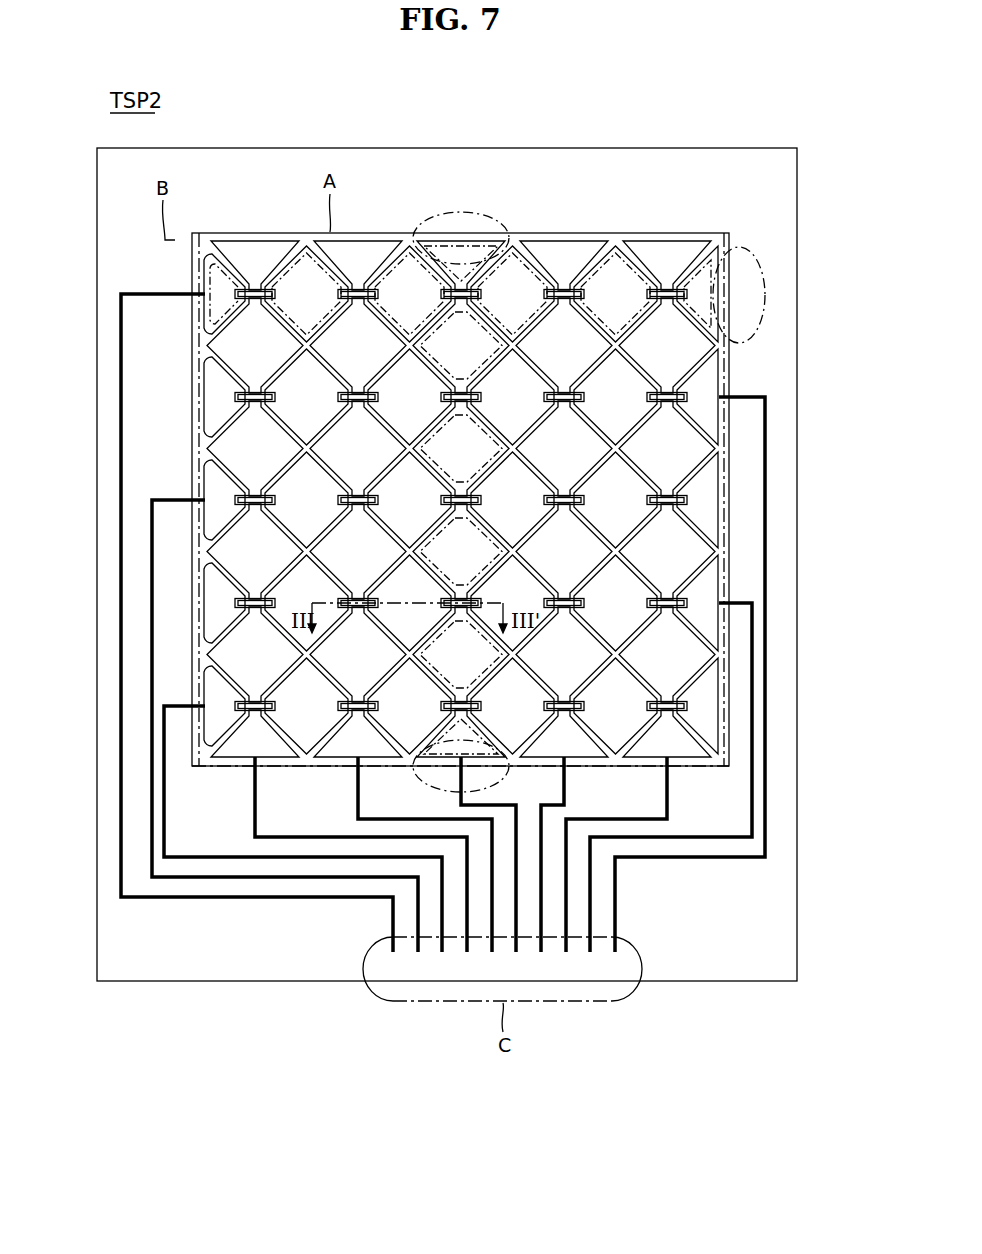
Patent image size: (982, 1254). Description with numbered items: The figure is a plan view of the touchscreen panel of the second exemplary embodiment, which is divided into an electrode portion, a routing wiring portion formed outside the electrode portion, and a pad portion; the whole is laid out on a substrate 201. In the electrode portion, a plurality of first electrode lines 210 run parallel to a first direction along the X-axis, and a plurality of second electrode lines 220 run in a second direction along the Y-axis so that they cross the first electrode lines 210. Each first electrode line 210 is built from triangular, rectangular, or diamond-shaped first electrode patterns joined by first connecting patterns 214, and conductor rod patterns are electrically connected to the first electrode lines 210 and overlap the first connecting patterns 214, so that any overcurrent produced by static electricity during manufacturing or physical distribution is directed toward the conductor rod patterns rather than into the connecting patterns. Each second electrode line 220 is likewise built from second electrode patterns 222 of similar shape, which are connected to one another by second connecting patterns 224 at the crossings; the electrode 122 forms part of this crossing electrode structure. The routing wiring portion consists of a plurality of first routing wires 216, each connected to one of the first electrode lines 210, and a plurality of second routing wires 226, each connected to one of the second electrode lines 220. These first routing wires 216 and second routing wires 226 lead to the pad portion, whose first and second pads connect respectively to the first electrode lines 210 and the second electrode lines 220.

The first sensing electrode 122 is at (620, 276).
The substrate 201 is at (793, 927).
The first electrode lines 210 is at (765, 293).
The first connecting patterns 214 is at (235, 397).
The first routing wires 216 is at (121, 333).
The second electrode lines 220 is at (462, 212).
The second electrode patterns 222 is at (548, 340).
The second connecting patterns 224 is at (564, 288).
The second routing wires 226 is at (254, 812).